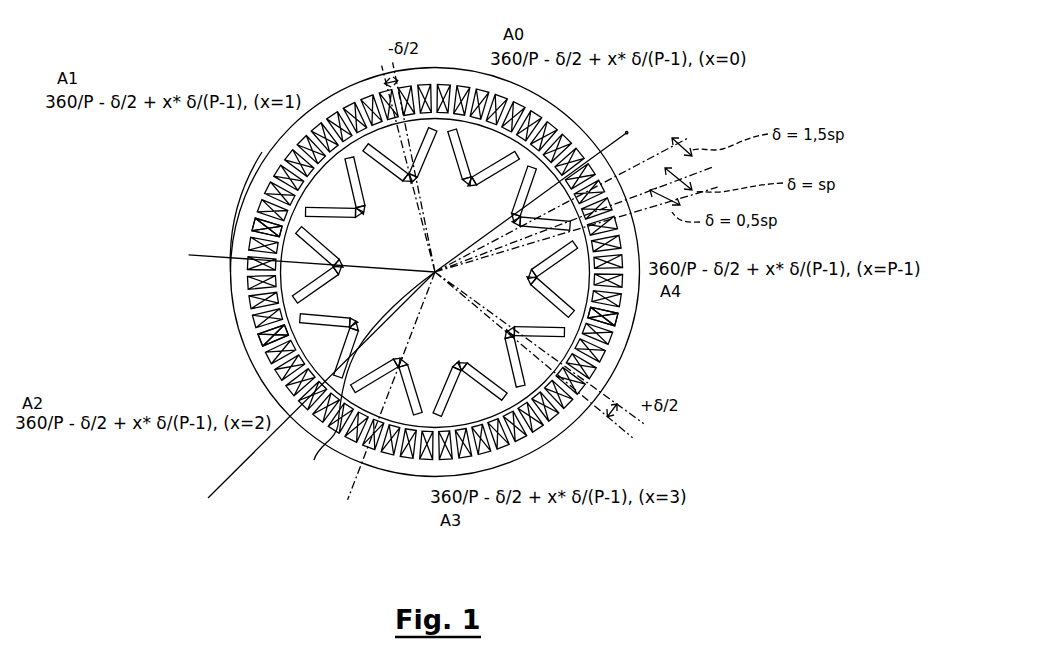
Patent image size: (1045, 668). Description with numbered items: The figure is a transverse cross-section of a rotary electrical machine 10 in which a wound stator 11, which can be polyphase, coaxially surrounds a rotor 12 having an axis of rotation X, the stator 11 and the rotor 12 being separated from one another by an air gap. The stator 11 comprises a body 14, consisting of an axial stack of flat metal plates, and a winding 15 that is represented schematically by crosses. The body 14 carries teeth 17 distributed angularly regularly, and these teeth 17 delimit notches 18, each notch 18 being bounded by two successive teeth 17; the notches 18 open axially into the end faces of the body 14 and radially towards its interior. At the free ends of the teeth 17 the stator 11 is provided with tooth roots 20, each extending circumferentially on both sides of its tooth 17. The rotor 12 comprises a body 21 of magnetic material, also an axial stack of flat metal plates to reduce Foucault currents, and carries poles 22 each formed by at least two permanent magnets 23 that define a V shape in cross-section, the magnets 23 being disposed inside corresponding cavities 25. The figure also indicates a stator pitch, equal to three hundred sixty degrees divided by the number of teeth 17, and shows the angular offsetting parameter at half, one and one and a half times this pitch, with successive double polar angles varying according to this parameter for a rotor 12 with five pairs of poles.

The rotary electrical machine 10 is at (228, 56).
The stator 11 is at (232, 250).
The rotor 12 is at (383, 192).
The stator body 14 is at (262, 186).
The winding 15 is at (262, 338).
The teeth 17 is at (250, 228).
The notches 18 is at (250, 306).
The tooth roots 20 is at (240, 276).
The rotor body 21 is at (605, 325).
The poles 22 is at (314, 460).
The permanent magnets 23 is at (548, 128).
The cavities 25 is at (556, 422).
The axis of rotation X is at (313, 395).